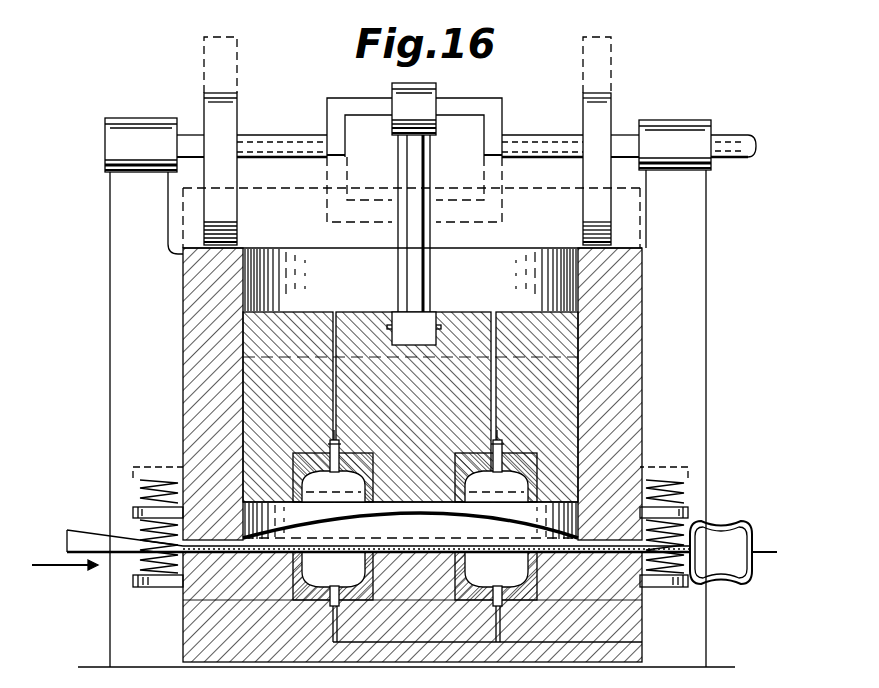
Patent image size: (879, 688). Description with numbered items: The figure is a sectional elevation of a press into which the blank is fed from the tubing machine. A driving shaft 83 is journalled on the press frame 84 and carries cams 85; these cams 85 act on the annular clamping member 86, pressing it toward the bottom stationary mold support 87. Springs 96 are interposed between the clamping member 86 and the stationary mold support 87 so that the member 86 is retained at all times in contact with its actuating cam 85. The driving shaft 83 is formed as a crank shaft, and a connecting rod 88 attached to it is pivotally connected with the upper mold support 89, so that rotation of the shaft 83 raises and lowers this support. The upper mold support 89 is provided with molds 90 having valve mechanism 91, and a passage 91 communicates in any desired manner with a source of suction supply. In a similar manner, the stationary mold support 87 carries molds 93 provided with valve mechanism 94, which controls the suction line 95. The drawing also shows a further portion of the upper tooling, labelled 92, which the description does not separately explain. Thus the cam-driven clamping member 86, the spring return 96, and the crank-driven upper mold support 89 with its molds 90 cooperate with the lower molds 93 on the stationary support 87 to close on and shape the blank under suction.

The driving shaft 83 is at (291, 124).
The press frame 84 is at (682, 293).
The cams 85 is at (612, 97).
The annular clamping member 86 is at (190, 334).
The stationary mold support 87 is at (618, 608).
The connecting rod 88 is at (430, 264).
The upper mold support 89 is at (413, 407).
The molds 90 is at (356, 458).
The valve mechanism 91 is at (330, 468).
The upper die blocks 92 is at (333, 372).
The molds 93 is at (452, 579).
The valve mechanism 94 is at (296, 571).
The suction line 95 is at (625, 643).
The springs 96 is at (140, 563).